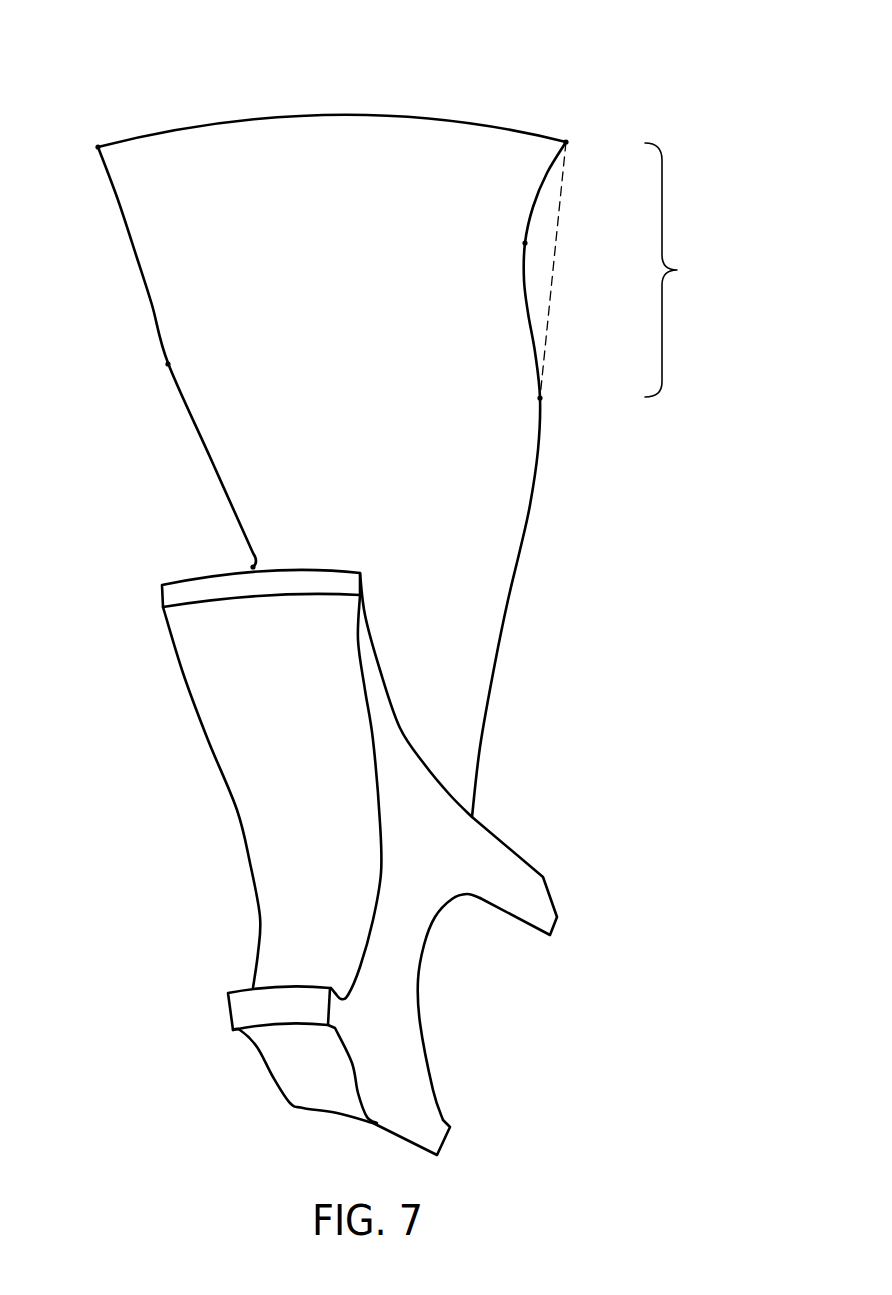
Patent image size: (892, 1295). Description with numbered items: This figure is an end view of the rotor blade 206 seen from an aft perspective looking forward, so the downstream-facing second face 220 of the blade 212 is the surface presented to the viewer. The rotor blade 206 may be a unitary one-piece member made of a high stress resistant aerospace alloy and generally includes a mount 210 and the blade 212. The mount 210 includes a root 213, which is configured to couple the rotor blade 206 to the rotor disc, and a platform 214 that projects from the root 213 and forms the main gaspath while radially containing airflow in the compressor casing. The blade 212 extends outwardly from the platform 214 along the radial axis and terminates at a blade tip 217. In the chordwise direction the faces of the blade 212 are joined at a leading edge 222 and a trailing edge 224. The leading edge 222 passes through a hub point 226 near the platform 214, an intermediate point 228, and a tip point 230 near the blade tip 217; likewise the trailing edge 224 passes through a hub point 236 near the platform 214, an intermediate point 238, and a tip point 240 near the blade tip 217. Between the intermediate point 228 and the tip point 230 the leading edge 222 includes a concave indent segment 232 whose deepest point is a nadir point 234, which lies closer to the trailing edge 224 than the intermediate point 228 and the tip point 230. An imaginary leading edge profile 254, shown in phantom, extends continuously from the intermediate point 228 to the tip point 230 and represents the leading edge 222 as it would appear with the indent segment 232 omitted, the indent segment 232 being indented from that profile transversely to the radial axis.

The rotor blade 206 is at (697, 107).
The mount 210 is at (274, 810).
The blade 212 is at (163, 265).
The root 213 is at (283, 923).
The platform 214 is at (165, 597).
The blade tip 217 is at (427, 112).
The second face 220 is at (378, 311).
The leading edge 222 is at (536, 505).
The trailing edge 224 is at (154, 339).
The hub point 226 is at (473, 817).
The intermediate point 228 is at (540, 398).
The tip point 230 is at (566, 142).
The indent segment 232 is at (689, 270).
The nadir point 234 is at (525, 243).
The hub point 236 is at (254, 567).
The intermediate point 238 is at (168, 365).
The tip point 240 is at (98, 146).
The imaginary leading edge profile 254 is at (557, 247).